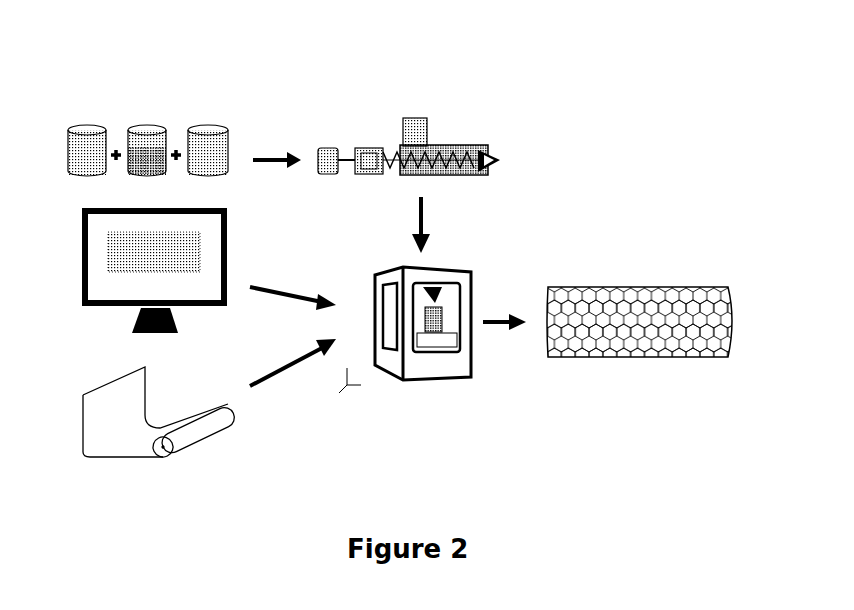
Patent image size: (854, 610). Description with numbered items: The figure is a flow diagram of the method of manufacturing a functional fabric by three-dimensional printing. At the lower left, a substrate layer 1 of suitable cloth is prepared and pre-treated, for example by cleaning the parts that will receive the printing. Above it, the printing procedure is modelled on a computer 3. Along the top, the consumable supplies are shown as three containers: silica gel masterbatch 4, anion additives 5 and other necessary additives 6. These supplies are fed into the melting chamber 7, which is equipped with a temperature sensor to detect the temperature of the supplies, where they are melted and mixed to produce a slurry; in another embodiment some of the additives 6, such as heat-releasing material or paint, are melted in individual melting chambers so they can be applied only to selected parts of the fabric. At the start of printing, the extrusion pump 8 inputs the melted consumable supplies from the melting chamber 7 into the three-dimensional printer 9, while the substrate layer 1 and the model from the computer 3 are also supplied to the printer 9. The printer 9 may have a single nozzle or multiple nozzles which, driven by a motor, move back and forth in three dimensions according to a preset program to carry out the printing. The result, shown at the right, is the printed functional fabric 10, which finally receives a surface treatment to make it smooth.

The substrate layer 1 is at (123, 400).
The computer 3 is at (98, 240).
The silica gel masterbatch 4 is at (80, 106).
The anion additives 5 is at (142, 106).
The other necessary additives 6 is at (218, 106).
The melting chamber 7 is at (465, 118).
The extrusion pump 8 is at (364, 148).
The 3D printer 9 is at (481, 255).
The printed functional fabric 10 is at (667, 280).